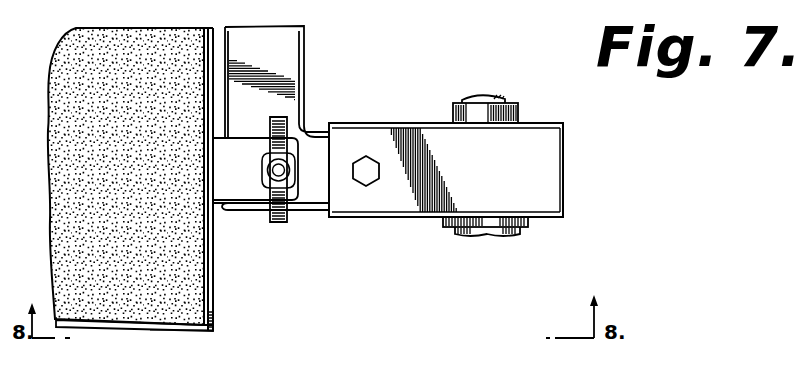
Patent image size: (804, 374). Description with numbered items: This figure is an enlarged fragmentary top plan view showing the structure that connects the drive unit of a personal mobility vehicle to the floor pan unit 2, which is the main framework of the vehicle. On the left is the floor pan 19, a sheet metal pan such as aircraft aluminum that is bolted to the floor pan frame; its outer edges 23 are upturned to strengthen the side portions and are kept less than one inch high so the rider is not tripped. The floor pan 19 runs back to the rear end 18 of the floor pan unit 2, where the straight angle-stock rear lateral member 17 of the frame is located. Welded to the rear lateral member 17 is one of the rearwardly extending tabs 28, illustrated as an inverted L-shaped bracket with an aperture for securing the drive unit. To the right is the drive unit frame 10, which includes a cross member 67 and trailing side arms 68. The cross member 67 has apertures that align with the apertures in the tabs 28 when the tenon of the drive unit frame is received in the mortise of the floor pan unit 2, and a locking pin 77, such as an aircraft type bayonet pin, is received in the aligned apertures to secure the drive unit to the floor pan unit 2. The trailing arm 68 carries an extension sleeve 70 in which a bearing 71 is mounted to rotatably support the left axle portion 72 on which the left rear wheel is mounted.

The floor pan unit 2 is at (190, 329).
The drive unit frame 10 is at (419, 218).
The rear lateral member 17 is at (209, 263).
The rear end 18 is at (193, 238).
The floor pan 19 is at (83, 258).
The outer edges 23 is at (138, 323).
The tabs 28 is at (222, 178).
The cross member 67 is at (292, 53).
The trailing side arms 68 is at (317, 203).
The extension sleeves 70 is at (558, 162).
The bearings 71 is at (456, 110).
The left axle portion 72 is at (503, 100).
The locking pins 77 is at (282, 223).